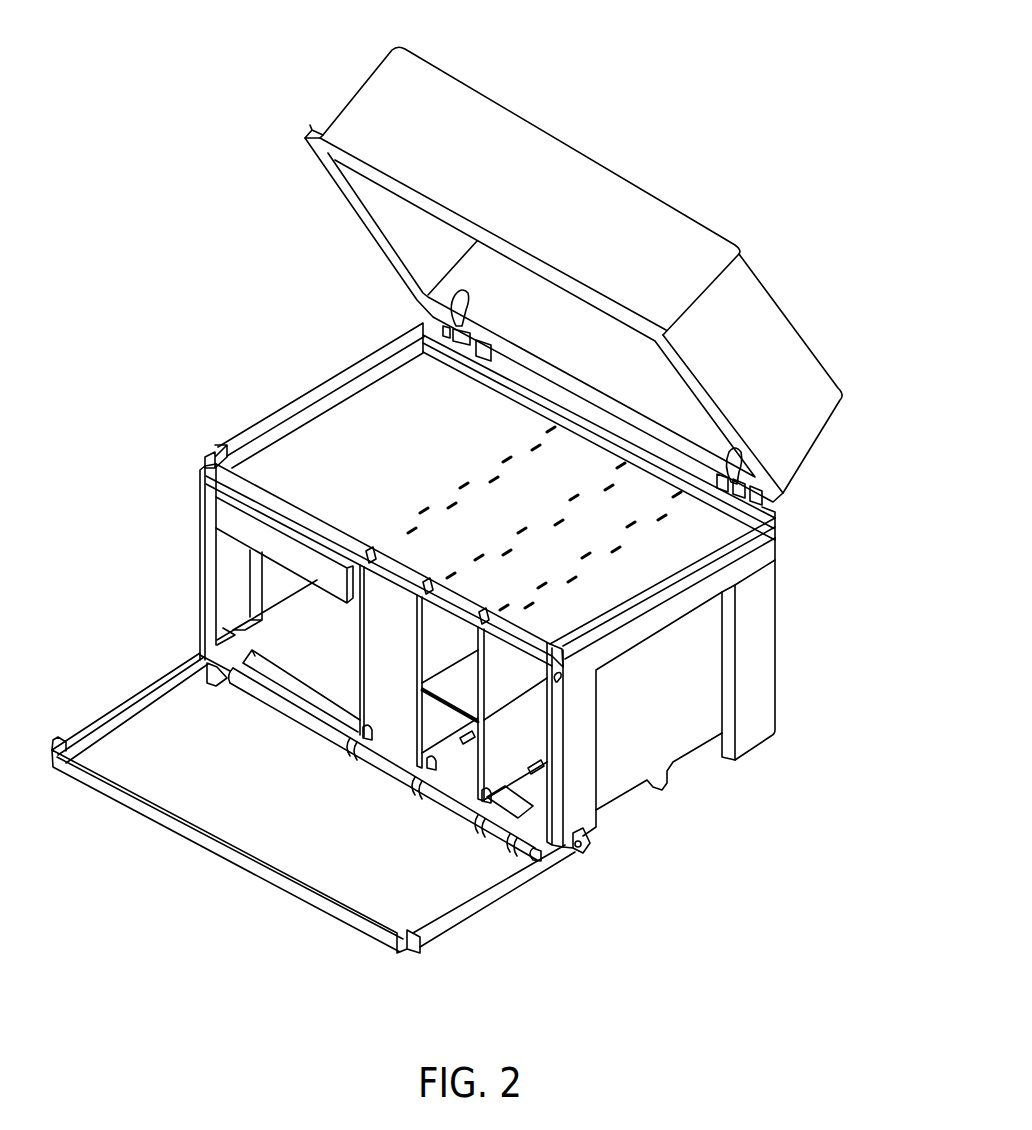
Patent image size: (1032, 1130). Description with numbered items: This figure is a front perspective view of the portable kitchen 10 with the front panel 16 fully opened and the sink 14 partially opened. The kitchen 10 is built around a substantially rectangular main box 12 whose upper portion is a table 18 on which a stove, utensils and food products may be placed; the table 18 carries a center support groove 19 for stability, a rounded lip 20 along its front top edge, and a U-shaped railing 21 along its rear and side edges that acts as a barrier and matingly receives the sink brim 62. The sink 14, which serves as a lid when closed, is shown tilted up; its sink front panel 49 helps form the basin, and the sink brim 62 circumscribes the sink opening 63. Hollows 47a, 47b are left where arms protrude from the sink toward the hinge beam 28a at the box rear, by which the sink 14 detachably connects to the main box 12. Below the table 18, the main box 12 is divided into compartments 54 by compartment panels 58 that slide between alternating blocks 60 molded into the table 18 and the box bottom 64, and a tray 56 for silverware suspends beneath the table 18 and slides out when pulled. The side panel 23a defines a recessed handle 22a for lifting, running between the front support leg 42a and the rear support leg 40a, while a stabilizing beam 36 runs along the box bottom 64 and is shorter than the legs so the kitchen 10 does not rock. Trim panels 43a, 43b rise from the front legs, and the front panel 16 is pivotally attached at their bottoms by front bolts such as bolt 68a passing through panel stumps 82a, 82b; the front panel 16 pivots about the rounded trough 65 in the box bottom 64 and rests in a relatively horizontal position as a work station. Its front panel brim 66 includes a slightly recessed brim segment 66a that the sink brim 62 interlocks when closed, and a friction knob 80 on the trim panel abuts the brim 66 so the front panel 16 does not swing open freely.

The portable kitchen 10 is at (481, 500).
The main box 12 is at (475, 614).
The sink 14 is at (603, 294).
The front panel 16 is at (313, 799).
The table 18 is at (522, 612).
The support groove 19 is at (506, 500).
The lip 20 is at (333, 532).
The railing 21 is at (246, 428).
The recessed handle 22a is at (687, 711).
The side panel 23a is at (631, 650).
The hinge beam 28a is at (779, 512).
The stabilizing beam 36 is at (661, 790).
The rear support leg 40a is at (761, 736).
The front support leg 42a is at (590, 838).
The trim panel 43a is at (555, 716).
The trim panel 43b is at (212, 583).
The hollow 47a is at (737, 455).
The hollow 47b is at (468, 300).
The sink front panel 49 is at (499, 182).
The compartments 54 is at (385, 643).
The tray 56 is at (253, 540).
The compartment panels 58 is at (398, 685).
The blocks 60 is at (417, 514).
The sink brim 62 is at (321, 137).
The sink opening 63 is at (600, 348).
The box bottom 64 is at (318, 645).
The rounded trough 65 is at (320, 692).
The front panel brim 66 is at (462, 910).
The brim segment 66a is at (234, 866).
The front bolt 68a is at (578, 852).
The friction knob 80 is at (556, 683).
The panel stump 82a is at (531, 855).
The panel stump 82b is at (208, 684).